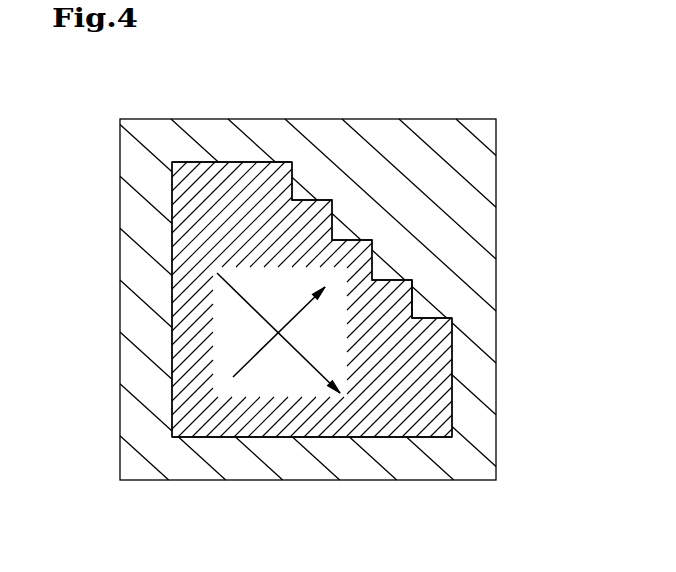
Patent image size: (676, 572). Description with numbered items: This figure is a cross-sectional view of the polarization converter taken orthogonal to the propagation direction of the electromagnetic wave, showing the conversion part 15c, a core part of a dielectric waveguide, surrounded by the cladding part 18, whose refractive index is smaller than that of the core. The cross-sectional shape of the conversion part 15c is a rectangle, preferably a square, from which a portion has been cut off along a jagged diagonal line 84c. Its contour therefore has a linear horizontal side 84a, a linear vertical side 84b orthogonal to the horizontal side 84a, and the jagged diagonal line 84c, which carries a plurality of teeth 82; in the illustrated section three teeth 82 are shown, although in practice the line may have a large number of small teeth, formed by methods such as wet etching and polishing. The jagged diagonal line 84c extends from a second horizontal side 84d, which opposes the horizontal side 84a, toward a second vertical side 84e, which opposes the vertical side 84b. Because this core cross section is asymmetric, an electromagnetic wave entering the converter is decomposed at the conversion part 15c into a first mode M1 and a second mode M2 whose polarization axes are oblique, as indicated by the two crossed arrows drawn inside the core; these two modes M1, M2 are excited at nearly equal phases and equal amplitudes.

The cladding part 18 is at (486, 185).
The conversion part 15c is at (248, 207).
The teeth 82 is at (362, 255).
The horizontal side 84a is at (386, 437).
The vertical side 84b is at (172, 340).
The jagged diagonal line 84c is at (412, 291).
The second horizontal side 84d is at (190, 200).
The second vertical side 84e is at (452, 407).
The first mode M1 is at (298, 362).
The second mode M2 is at (298, 318).